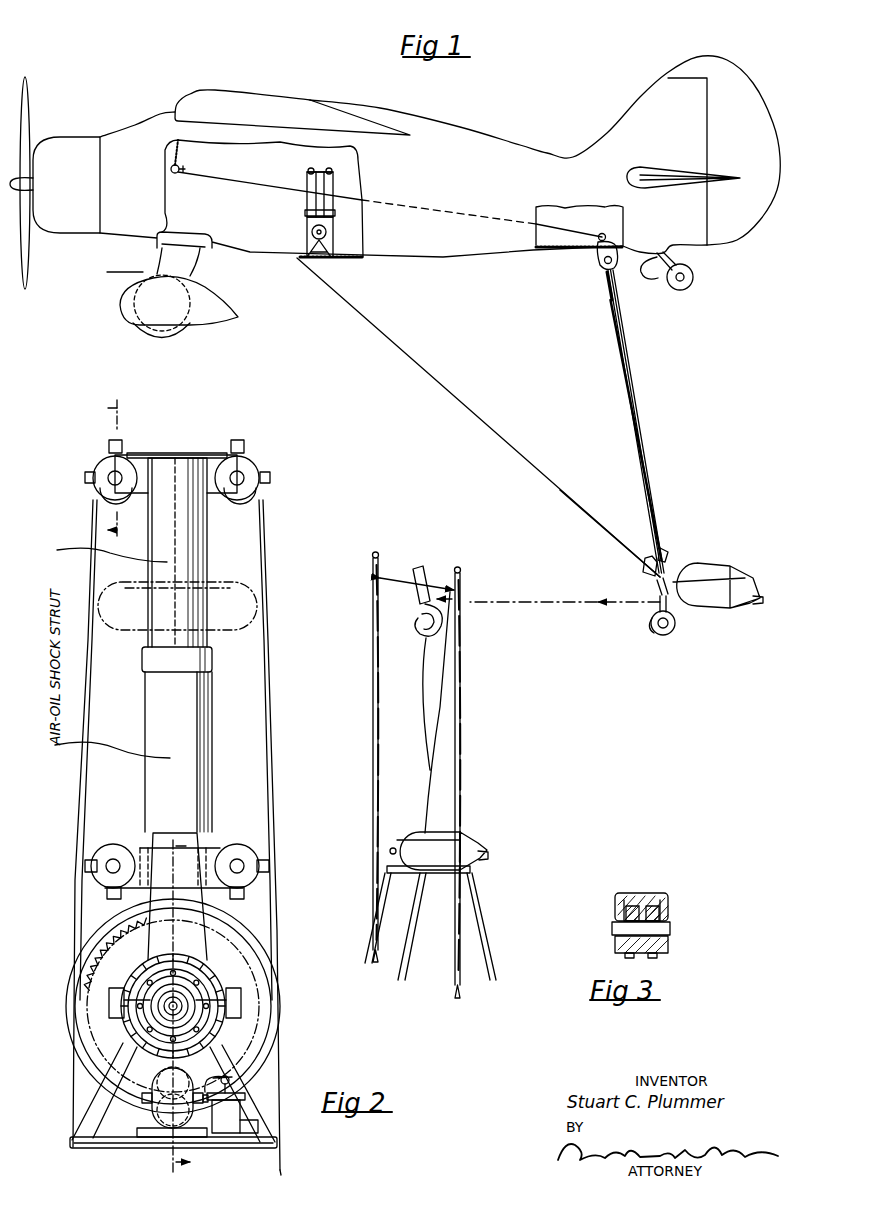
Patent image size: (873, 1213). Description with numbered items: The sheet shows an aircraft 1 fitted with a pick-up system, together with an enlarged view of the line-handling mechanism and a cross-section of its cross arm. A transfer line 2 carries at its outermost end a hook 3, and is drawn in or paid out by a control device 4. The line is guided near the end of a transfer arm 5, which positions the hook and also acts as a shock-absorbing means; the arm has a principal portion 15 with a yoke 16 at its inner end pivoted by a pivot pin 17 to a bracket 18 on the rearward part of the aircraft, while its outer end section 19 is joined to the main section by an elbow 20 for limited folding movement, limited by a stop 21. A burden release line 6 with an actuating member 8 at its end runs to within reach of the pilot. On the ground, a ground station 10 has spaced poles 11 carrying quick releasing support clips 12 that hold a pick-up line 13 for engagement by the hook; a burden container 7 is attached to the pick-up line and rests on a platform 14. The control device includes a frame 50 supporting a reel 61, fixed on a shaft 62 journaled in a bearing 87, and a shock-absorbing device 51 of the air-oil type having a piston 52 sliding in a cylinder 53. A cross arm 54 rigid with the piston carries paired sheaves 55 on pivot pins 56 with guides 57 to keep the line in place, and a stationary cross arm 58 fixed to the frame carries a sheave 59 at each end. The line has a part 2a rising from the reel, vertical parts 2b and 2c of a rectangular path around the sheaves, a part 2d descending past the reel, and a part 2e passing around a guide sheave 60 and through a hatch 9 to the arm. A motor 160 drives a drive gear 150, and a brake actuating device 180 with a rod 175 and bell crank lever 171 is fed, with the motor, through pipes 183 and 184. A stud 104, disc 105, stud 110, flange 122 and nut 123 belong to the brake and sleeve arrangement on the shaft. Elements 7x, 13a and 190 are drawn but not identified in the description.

In FIG. 1, the aircraft 1 is at (477, 133).
In FIG. 1, the transfer line 2 is at (432, 379).
In FIG. 2, the transfer line 2 is at (282, 1166).
In FIG. 2, the transfer line part 2a is at (73, 908).
In FIG. 2, the vertical transfer line part 2b is at (266, 745).
In FIG. 2, the vertical transfer line part 2c is at (90, 760).
In FIG. 2, the transfer line part 2d is at (278, 908).
In FIG. 1, the transfer line part 2e is at (585, 512).
In FIG. 1, the hook 3 is at (681, 630).
In FIG. 2, the hook 3 is at (114, 470).
In FIG. 1, the control device 4 is at (294, 205).
In FIG. 1, the transfer arm 5 is at (665, 375).
In FIG. 1, the burden release line 6 is at (242, 184).
In FIG. 1, the burden container 7 is at (437, 847).
In FIG. 1, the load being picked up 7x is at (708, 575).
In FIG. 1, the actuating member 8 is at (185, 170).
In FIG. 2, the actuating member 8 is at (174, 1006).
In FIG. 1, the hatch 9 is at (253, 258).
In FIG. 1, the ground station 10 is at (472, 751).
In FIG. 1, the poles 11 is at (371, 770).
In FIG. 1, the quick releasing support clips 12 is at (380, 568).
In FIG. 1, the pick-up line 13 is at (439, 707).
In FIG. 1, the loop link 13a is at (421, 566).
In FIG. 1, the platform 14 is at (472, 878).
In FIG. 1, the principal portion 15 is at (632, 423).
In FIG. 1, the yoke 16 is at (607, 286).
In FIG. 1, the pivot pin 17 is at (603, 264).
In FIG. 1, the bracket 18 is at (598, 254).
In FIG. 1, the end section 19 is at (657, 588).
In FIG. 1, the elbow 20 is at (648, 558).
In FIG. 1, the stop 21 is at (666, 550).
In FIG. 2, the frame 50 is at (92, 1096).
In FIG. 1, the shock-absorbing device 51 is at (335, 196).
In FIG. 2, the shock-absorbing device 51 is at (222, 737).
In FIG. 2, the piston 52 is at (185, 549).
In FIG. 2, the cylinder 53 is at (190, 694).
In FIG. 1, the cross arm 54 is at (318, 172).
In FIG. 2, the cross arm 54 is at (143, 470).
In FIG. 3, the cross arm 54 is at (670, 950).
In FIG. 2, the paired sheaves 55 is at (100, 463).
In FIG. 3, the paired sheaves 55 is at (627, 916).
In FIG. 2, the pivot pins 56 is at (108, 492).
In FIG. 3, the pivot pins 56 is at (670, 934).
In FIG. 2, the guides 57 is at (112, 442).
In FIG. 3, the guides 57 is at (640, 897).
In FIG. 2, the stationary cross arm 58 is at (220, 866).
In FIG. 2, the sheave 59 is at (110, 865).
In FIG. 1, the guide sheave 60 is at (304, 258).
In FIG. 1, the reel 61 is at (336, 246).
In FIG. 2, the reel 61 is at (66, 1001).
In FIG. 2, the shaft 62 is at (168, 1007).
In FIG. 2, the bearing 87 is at (185, 976).
In FIG. 2, the stud 104 is at (240, 1008).
In FIG. 2, the disc 105 is at (198, 990).
In FIG. 2, the stud 110 is at (168, 976).
In FIG. 2, the flange 122 is at (160, 1011).
In FIG. 2, the nut 123 is at (183, 1015).
In FIG. 2, the drive gear 150 is at (100, 948).
In FIG. 2, the motor 160 is at (148, 1115).
In FIG. 2, the bell crank lever 171 is at (228, 1077).
In FIG. 2, the rod 175 is at (232, 1081).
In FIG. 2, the brake actuating device 180 is at (228, 1125).
In FIG. 2, the pipe 183 is at (222, 1076).
In FIG. 2, the pipe 184 is at (148, 1093).
In FIG. 2, the bracket 190 is at (256, 1122).